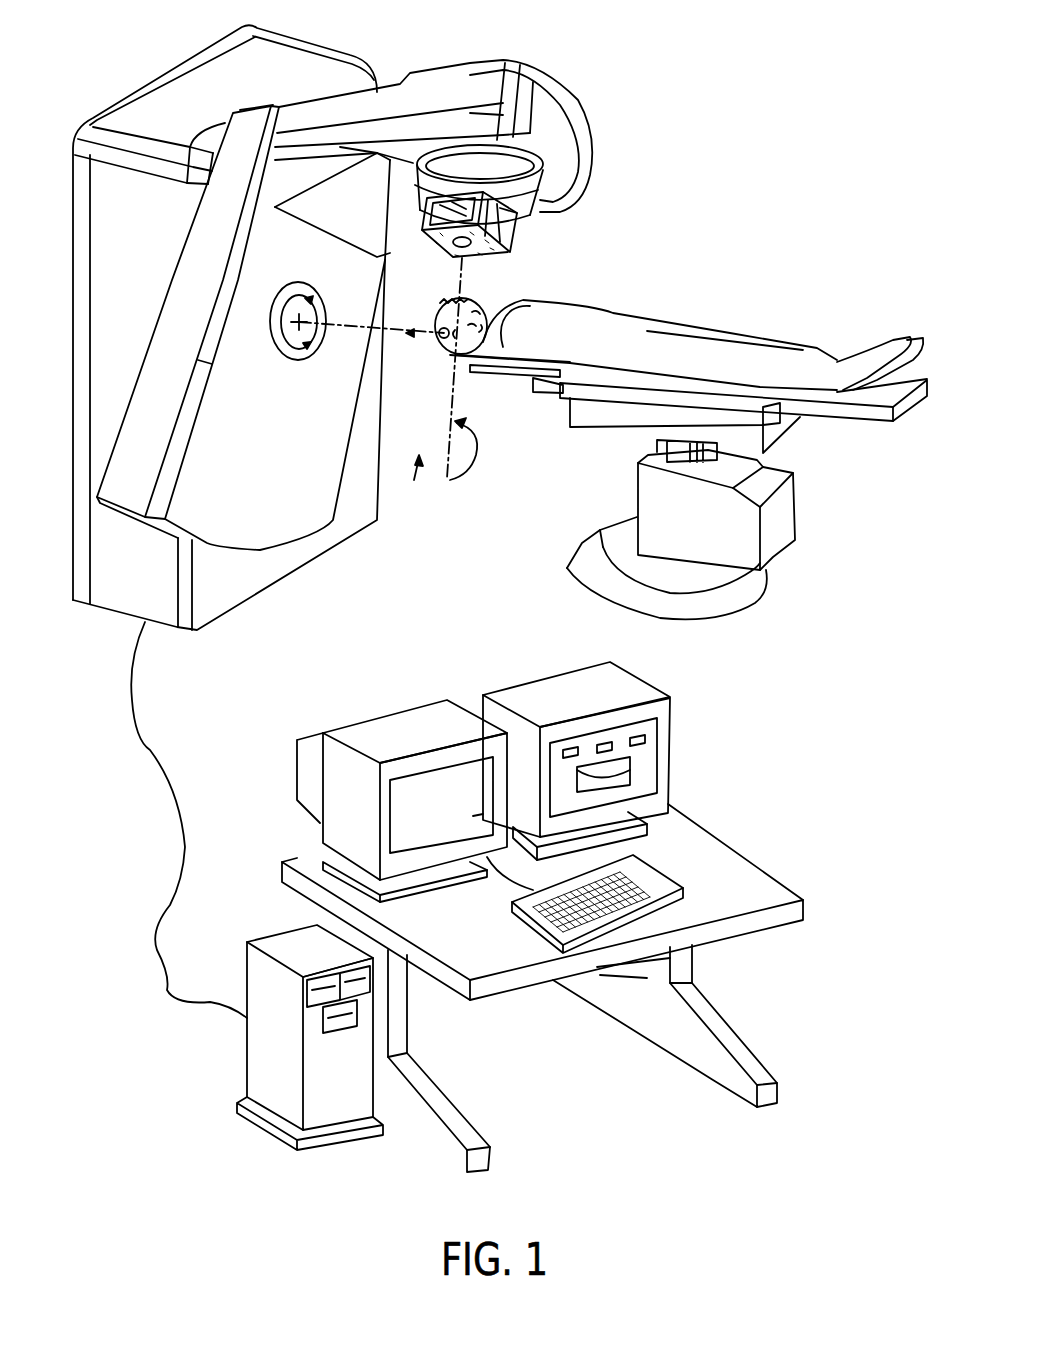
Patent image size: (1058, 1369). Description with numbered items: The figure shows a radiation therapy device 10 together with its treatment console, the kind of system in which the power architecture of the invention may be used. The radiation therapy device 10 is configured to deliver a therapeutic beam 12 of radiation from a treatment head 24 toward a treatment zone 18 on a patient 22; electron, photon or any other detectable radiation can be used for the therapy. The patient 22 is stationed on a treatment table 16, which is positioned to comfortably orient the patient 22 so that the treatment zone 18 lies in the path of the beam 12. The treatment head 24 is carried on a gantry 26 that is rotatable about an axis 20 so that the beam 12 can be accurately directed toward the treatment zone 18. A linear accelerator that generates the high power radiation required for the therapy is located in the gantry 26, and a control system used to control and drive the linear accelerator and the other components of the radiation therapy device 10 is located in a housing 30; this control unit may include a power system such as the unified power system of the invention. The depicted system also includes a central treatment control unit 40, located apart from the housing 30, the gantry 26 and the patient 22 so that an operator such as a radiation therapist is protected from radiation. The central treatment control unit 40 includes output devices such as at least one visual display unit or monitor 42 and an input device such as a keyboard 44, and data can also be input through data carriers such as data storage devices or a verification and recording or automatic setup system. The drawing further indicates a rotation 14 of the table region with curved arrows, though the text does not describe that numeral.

The radiation therapy device 10 is at (748, 181).
The therapeutic beam 12 is at (462, 263).
The vertical rotation axis of treatment couch 14 is at (450, 387).
The treatment table 16 is at (608, 425).
The treatment zone 18 is at (434, 343).
The axis 20 is at (357, 327).
The patient 22 is at (613, 323).
The treatment head 24 is at (530, 217).
The gantry 26 is at (162, 315).
The housing 30 is at (308, 47).
The central treatment control unit 40 is at (243, 1073).
The monitor 42 is at (667, 758).
The keyboard 44 is at (663, 877).